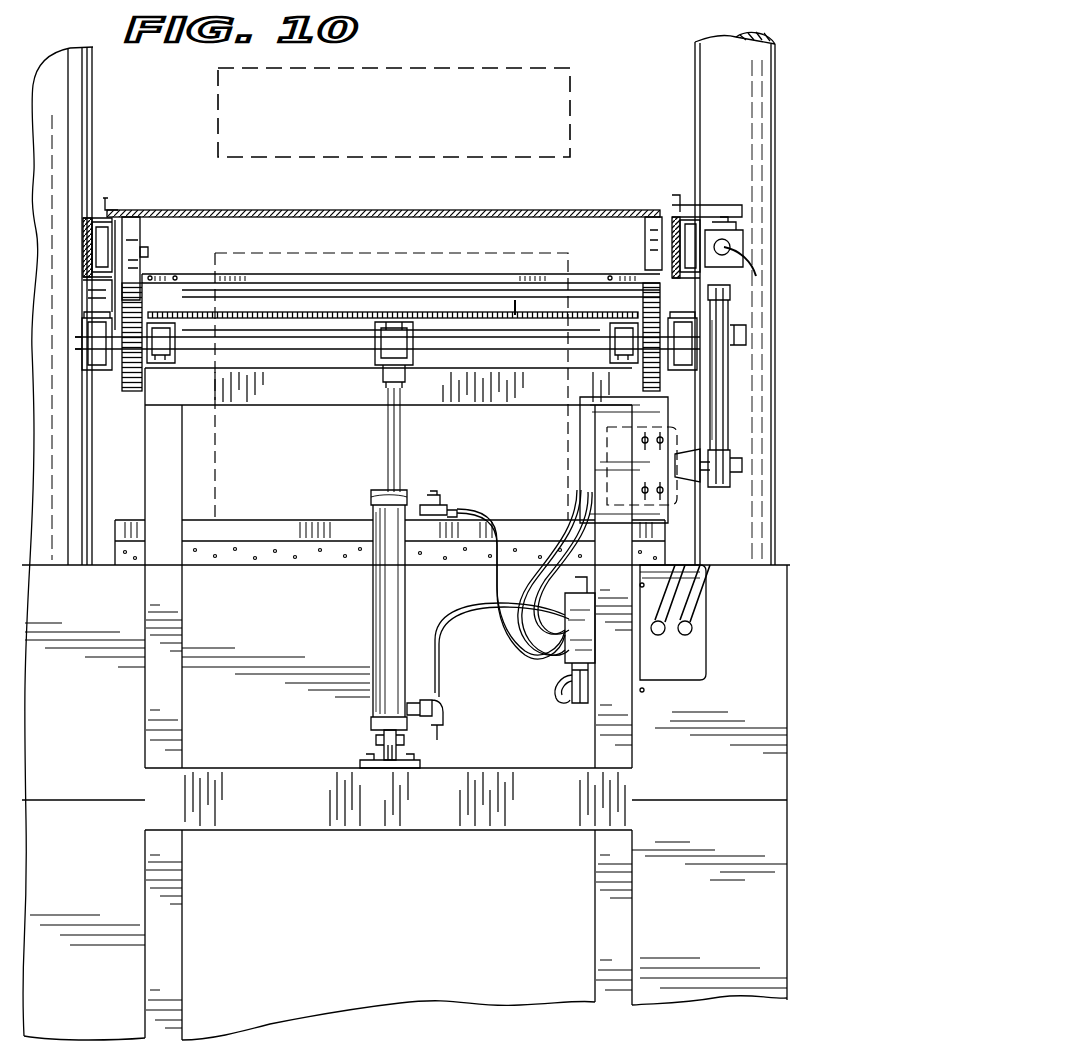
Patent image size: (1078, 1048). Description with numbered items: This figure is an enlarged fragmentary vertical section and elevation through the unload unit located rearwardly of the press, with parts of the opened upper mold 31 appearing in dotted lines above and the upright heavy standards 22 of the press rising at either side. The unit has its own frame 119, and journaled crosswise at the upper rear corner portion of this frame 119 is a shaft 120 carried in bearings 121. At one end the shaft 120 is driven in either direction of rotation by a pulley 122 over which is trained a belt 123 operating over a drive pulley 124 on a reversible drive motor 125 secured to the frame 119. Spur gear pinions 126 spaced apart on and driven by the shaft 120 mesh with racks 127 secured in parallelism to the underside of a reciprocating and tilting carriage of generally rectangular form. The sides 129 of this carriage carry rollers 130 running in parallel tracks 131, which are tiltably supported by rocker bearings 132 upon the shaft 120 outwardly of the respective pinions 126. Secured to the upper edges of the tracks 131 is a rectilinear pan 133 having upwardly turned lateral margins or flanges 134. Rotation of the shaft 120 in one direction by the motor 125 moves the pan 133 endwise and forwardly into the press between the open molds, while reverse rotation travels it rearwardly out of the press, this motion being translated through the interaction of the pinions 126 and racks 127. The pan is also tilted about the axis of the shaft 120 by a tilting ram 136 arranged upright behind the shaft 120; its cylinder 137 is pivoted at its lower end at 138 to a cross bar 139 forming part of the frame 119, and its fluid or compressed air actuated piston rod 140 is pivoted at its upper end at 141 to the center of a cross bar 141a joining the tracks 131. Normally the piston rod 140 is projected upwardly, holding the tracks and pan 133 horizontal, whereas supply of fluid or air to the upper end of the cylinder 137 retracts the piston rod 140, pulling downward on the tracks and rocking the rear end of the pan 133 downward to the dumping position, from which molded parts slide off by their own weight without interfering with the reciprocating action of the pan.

The standards 22 is at (83, 110).
The upper mold 31 is at (570, 130).
The frame 119 is at (628, 944).
The shaft 120 is at (320, 350).
The bearings 121 is at (177, 328).
The pulley 122 is at (730, 312).
The belt 123 is at (718, 422).
The drive pulley 124 is at (728, 490).
The reversible drive motor 125 is at (672, 502).
The spur gear pinions 126 is at (133, 388).
The racks 127 is at (150, 283).
The sides of carriage 129 is at (145, 250).
The rollers 130 is at (142, 236).
The tracks 131 is at (100, 228).
The rocker bearings 132 is at (97, 372).
The pan 133 is at (372, 214).
The lateral margins or flanges 134 is at (106, 198).
The tilting ram 136 is at (366, 612).
The cylinder 137 is at (378, 650).
The pivot 138 is at (402, 746).
The cross bar 139 is at (330, 828).
The piston rod 140 is at (387, 452).
The pivot 141 is at (413, 342).
The cross bar 141a is at (525, 318).